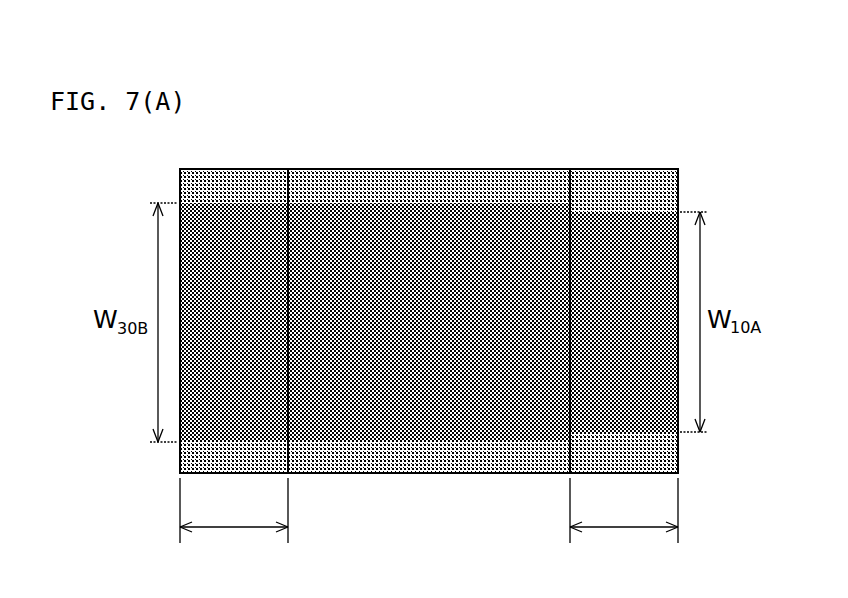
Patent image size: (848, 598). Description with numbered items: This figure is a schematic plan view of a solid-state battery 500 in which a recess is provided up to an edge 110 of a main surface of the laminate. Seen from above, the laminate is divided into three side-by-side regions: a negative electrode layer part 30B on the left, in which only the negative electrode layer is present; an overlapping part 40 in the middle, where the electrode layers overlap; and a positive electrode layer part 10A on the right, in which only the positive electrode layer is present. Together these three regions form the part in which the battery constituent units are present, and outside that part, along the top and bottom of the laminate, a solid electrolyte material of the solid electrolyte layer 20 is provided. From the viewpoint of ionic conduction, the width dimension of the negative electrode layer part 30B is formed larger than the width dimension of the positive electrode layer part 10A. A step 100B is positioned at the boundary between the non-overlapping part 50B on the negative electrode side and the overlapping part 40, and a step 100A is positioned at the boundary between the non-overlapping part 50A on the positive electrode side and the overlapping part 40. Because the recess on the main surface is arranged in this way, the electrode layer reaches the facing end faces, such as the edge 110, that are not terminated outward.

The solid-state battery 500 is at (587, 98).
The solid electrolyte layer 20 is at (429, 322).
The negative electrode layer part 30B is at (265, 347).
The overlapping part 40 is at (456, 347).
The positive electrode layer part 10A is at (660, 352).
The step between non-overlapping part on negative electrode side and overlapping par 100B is at (297, 253).
The step between non-overlapping part on positive electrode side and overlapping par 100A is at (557, 252).
The edge 110 is at (678, 375).
The non-overlapping part on negative electrode side 50B is at (234, 520).
The non-overlapping part on positive electrode side 50A is at (624, 520).